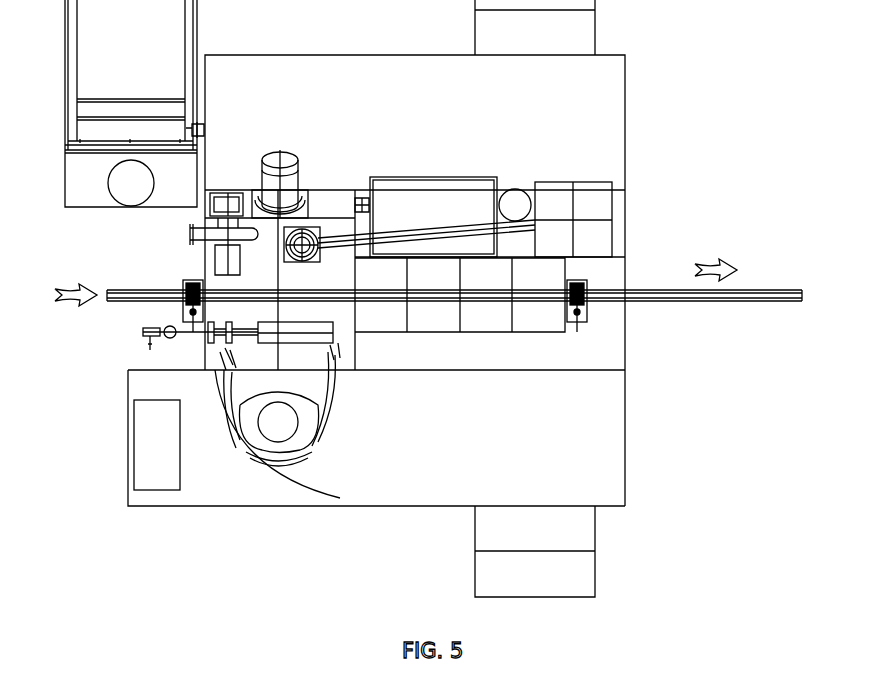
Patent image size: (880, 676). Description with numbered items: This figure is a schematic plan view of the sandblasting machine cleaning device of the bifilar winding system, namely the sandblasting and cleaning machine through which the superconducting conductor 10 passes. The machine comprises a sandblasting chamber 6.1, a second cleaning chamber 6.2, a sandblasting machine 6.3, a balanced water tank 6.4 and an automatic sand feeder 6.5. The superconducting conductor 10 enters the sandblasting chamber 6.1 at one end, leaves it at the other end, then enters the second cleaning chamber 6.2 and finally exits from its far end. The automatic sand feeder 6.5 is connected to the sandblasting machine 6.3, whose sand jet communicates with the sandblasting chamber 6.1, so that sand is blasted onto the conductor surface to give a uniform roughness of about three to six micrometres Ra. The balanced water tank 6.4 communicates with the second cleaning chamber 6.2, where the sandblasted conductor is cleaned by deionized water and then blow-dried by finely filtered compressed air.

The superconducting conductor 10 is at (115, 290).
The sandblasting chamber 6.1 is at (328, 198).
The second cleaning chamber 6.2 is at (426, 318).
The sandblasting machine 6.3 is at (268, 185).
The balanced water tank 6.4 is at (420, 200).
The automatic sand feeder 6.5 is at (552, 200).